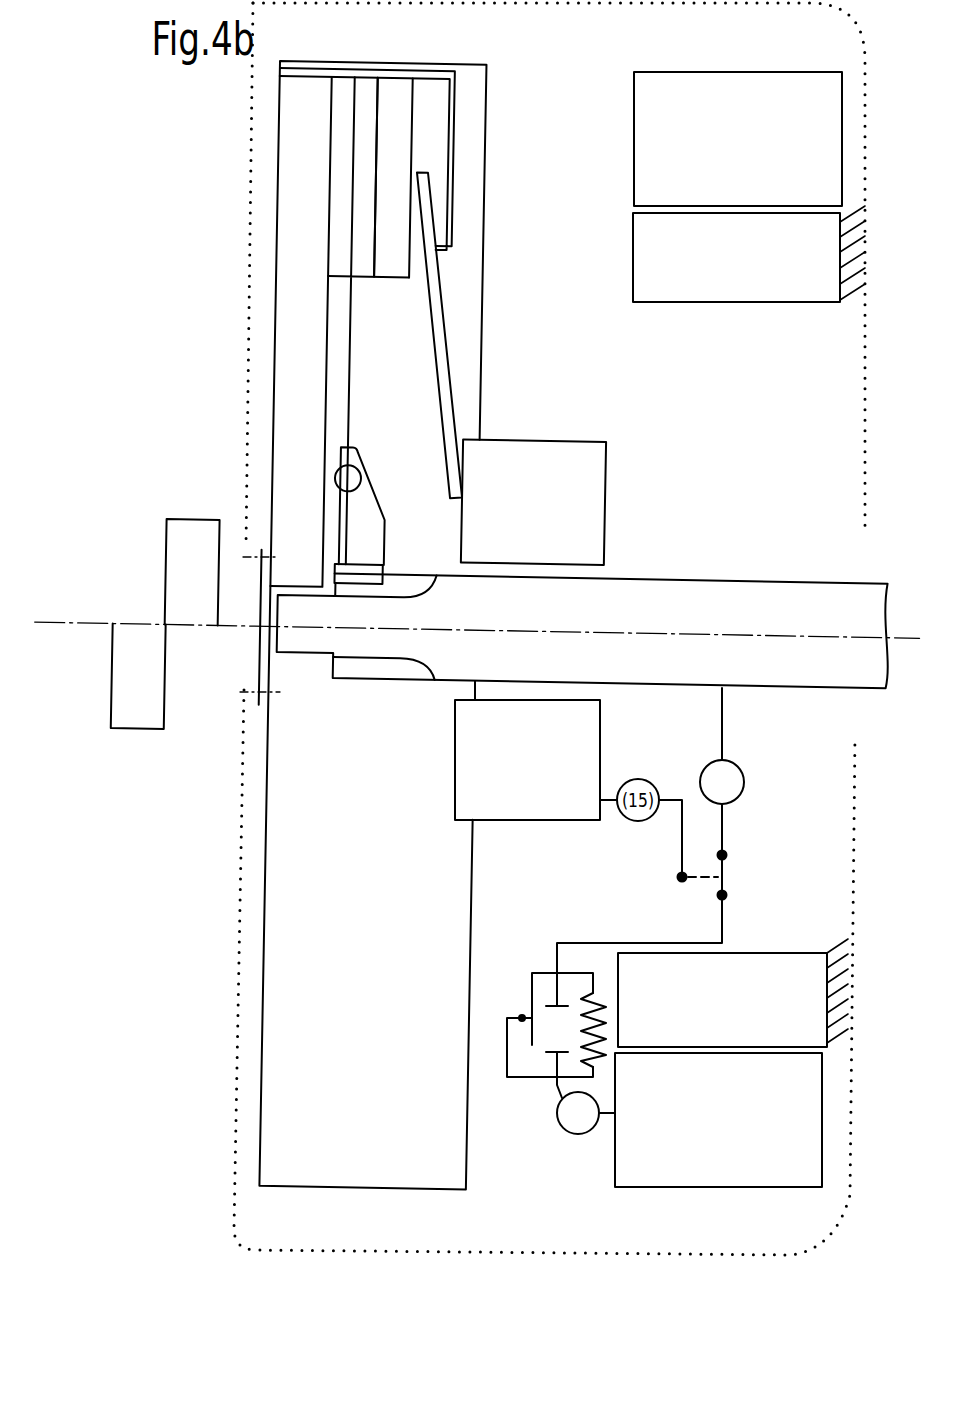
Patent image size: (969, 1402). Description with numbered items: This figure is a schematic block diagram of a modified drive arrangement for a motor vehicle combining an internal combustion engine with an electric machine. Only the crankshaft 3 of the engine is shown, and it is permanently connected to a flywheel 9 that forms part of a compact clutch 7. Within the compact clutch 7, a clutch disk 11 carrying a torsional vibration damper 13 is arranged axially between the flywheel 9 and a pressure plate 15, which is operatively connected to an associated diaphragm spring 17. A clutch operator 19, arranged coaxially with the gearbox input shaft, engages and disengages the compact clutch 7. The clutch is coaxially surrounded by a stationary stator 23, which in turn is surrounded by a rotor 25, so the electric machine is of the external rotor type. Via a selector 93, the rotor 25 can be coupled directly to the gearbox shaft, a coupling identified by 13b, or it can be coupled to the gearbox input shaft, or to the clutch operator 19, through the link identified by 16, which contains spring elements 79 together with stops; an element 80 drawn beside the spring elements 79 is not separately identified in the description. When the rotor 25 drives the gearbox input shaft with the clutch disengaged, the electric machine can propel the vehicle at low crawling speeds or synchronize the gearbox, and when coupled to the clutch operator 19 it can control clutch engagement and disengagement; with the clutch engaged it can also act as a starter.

The crankshaft 3 is at (243, 627).
The compact clutch 7 is at (279, 133).
The flywheel 9 is at (297, 255).
The clutch disk 11 is at (340, 171).
The torsional vibration damper 13 is at (343, 477).
The pressure plate 15 is at (398, 98).
The diaphragm spring 17 is at (448, 325).
The clutch operator 19 is at (524, 450).
The stator 23 is at (725, 282).
The rotor 25 is at (702, 92).
The spring elements 79 is at (600, 1003).
The capacitor 80 is at (521, 1016).
The selector 93 is at (722, 877).
The direct coupling of rotor to gearbox shaft 13b is at (722, 782).
The link with spring elements and stops 16 is at (578, 1113).